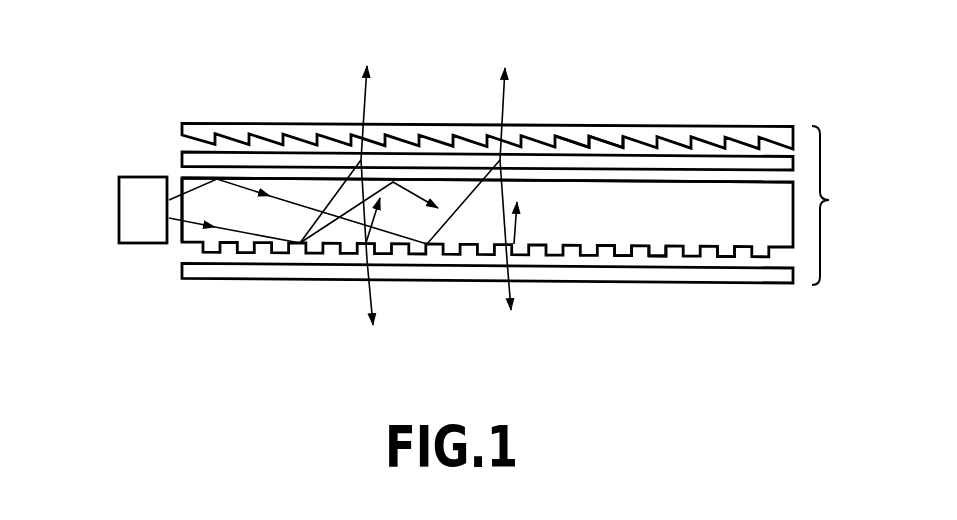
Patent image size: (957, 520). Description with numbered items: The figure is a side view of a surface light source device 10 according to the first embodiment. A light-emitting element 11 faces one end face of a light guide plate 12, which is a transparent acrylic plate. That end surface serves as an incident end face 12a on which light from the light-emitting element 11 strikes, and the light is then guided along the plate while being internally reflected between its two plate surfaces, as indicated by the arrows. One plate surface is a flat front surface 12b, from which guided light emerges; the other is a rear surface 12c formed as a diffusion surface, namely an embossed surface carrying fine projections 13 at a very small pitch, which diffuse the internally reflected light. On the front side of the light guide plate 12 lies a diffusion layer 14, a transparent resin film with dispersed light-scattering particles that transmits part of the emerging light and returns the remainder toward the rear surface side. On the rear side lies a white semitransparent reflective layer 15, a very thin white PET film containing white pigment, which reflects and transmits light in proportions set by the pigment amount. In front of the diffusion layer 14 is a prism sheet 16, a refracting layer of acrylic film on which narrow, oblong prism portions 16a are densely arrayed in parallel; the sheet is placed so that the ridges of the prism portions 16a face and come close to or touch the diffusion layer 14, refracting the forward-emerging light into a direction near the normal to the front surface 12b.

The surface light source device 10 is at (841, 205).
The light-emitting element 11 is at (135, 211).
The light guide plate 12 is at (733, 200).
The incident end face 12a is at (178, 231).
The front surface 12b is at (682, 181).
The rear surface 12c is at (708, 252).
The fine projections 13 is at (656, 258).
The diffusion layer 14 is at (261, 160).
The white semitransparent reflective layer 15 is at (273, 270).
The prism sheet 16 is at (532, 124).
The prism portions 16a is at (608, 138).